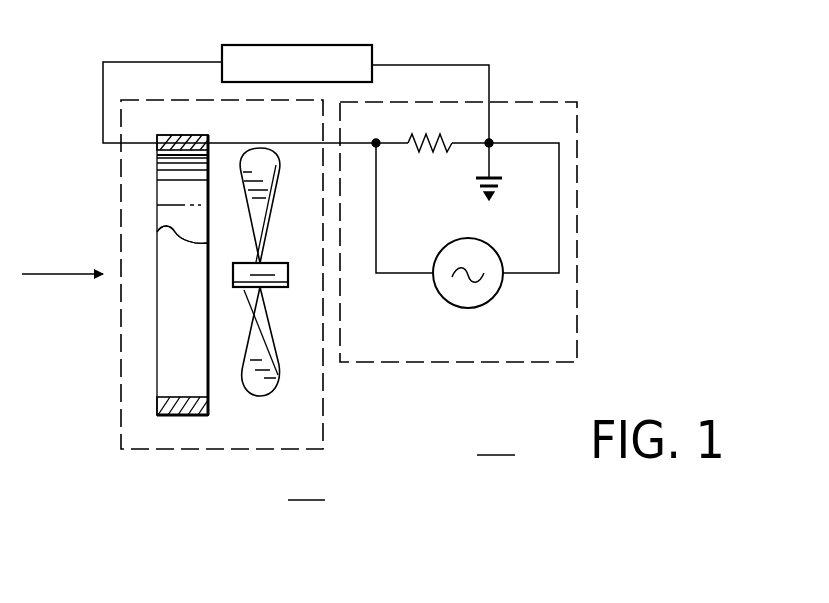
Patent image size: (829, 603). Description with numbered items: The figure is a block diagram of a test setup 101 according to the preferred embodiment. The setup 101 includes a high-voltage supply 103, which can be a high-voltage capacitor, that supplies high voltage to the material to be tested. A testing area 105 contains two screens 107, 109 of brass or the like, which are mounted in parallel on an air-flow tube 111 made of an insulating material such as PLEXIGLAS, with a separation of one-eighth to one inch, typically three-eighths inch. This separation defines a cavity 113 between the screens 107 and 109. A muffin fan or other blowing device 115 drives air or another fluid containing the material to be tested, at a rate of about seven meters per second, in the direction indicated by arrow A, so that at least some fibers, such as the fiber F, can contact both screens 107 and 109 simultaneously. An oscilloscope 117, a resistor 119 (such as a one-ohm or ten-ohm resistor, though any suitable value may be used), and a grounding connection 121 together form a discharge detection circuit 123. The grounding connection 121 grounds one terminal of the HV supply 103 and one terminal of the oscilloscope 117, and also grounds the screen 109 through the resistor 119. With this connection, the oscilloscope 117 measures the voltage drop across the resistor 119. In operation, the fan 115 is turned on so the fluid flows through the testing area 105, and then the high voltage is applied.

The setup 101 is at (543, 64).
The high-voltage supply 103 is at (398, 42).
The testing area 105 is at (318, 440).
The screen 107 is at (155, 173).
The screen 109 is at (213, 382).
The air-flow tube 111 is at (170, 418).
The cavity 113 is at (175, 353).
The fiber F is at (157, 231).
The arrow A is at (62, 260).
The muffin fan 115 is at (277, 125).
The oscilloscope 117 is at (452, 305).
The resistor 119 is at (412, 153).
The grounding connection 121 is at (502, 192).
The discharge detection circuit 123 is at (503, 346).